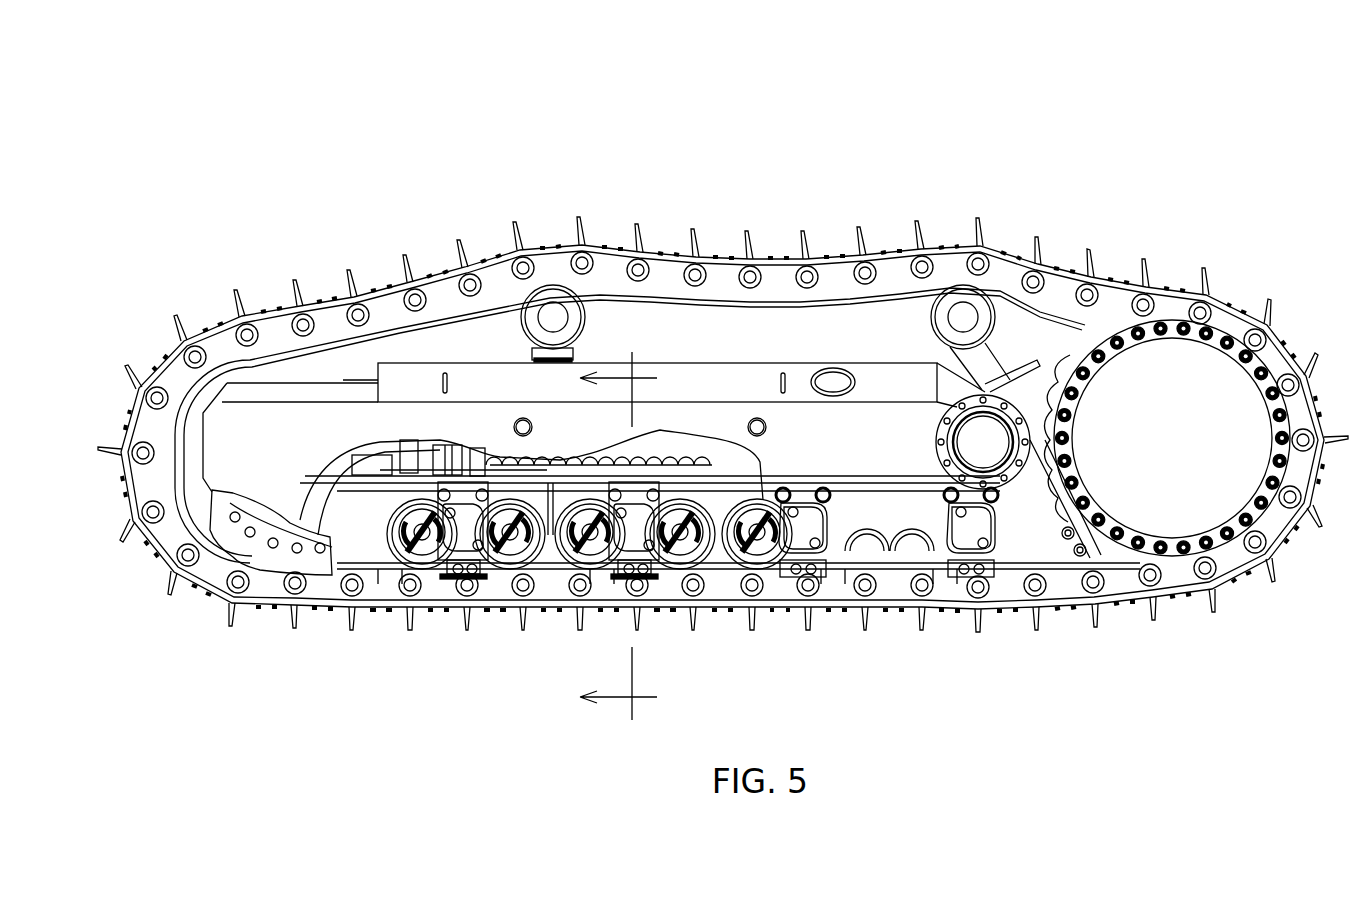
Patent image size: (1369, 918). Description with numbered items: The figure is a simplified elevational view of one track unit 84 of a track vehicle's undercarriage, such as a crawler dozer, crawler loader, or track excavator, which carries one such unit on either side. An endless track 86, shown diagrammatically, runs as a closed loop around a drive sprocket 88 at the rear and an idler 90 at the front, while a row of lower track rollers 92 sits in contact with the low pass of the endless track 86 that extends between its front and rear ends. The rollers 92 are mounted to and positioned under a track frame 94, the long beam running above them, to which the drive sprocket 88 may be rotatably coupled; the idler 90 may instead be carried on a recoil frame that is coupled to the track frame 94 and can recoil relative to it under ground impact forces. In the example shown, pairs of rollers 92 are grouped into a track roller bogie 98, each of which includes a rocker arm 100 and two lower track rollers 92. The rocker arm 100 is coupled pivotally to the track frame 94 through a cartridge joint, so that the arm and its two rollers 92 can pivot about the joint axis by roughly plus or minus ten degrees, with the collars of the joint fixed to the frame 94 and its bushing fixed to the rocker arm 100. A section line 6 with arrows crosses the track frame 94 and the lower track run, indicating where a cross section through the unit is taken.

The track unit 84 is at (257, 128).
The endless track 86 is at (763, 245).
The drive sprocket 88 is at (1077, 358).
The idler 90 is at (316, 378).
The lower track roller 92 is at (677, 563).
The track frame 94 is at (730, 363).
The track roller bogie 98 is at (946, 595).
The rocker arm 100 is at (665, 512).
The section line 6- 6 is at (618, 538).